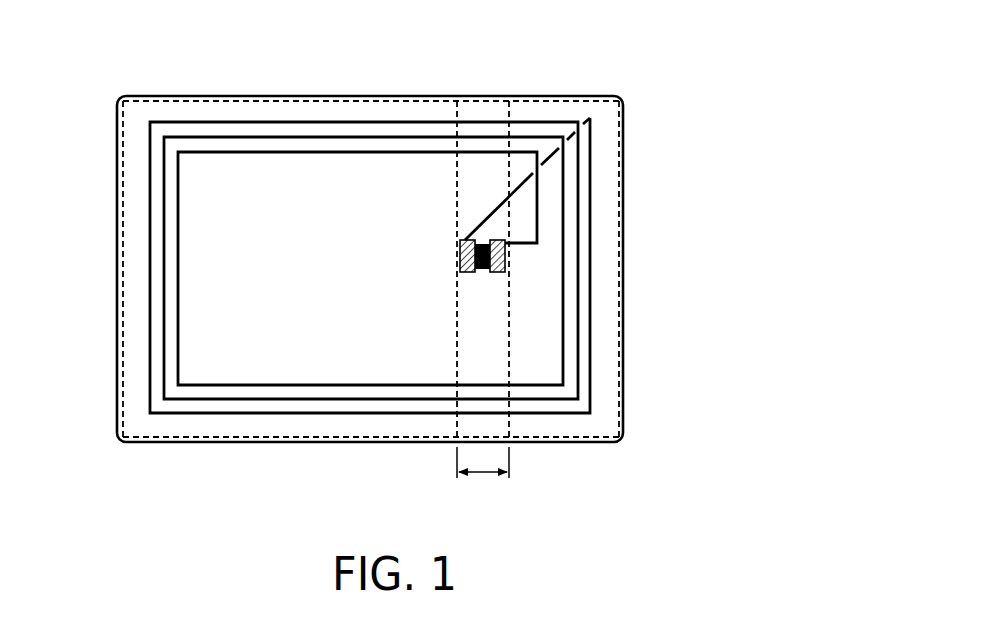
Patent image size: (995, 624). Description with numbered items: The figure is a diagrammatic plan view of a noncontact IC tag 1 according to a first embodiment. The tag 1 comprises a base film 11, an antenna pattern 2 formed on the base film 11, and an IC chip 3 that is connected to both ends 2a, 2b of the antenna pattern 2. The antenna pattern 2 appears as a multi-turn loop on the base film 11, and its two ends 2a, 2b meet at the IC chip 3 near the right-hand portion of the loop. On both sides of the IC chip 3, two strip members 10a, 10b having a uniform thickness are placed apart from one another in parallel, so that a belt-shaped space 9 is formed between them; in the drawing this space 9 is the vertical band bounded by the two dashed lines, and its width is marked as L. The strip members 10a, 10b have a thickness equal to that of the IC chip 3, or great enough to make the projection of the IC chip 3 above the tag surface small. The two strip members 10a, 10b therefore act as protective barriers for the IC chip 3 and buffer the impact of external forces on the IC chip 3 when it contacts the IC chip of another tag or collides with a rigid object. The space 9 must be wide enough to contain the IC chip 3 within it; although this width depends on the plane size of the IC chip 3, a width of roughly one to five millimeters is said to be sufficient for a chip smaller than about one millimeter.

The noncontact IC tag 1 is at (361, 68).
The antenna pattern 2 is at (270, 422).
The end of antenna pattern 2a is at (460, 251).
The end of antenna pattern 2b is at (505, 257).
The IC chip 3 is at (483, 270).
The belt-shaped space 9 is at (482, 163).
The strip member 10a is at (621, 218).
The strip member 10b is at (117, 280).
The base film 11 is at (624, 375).